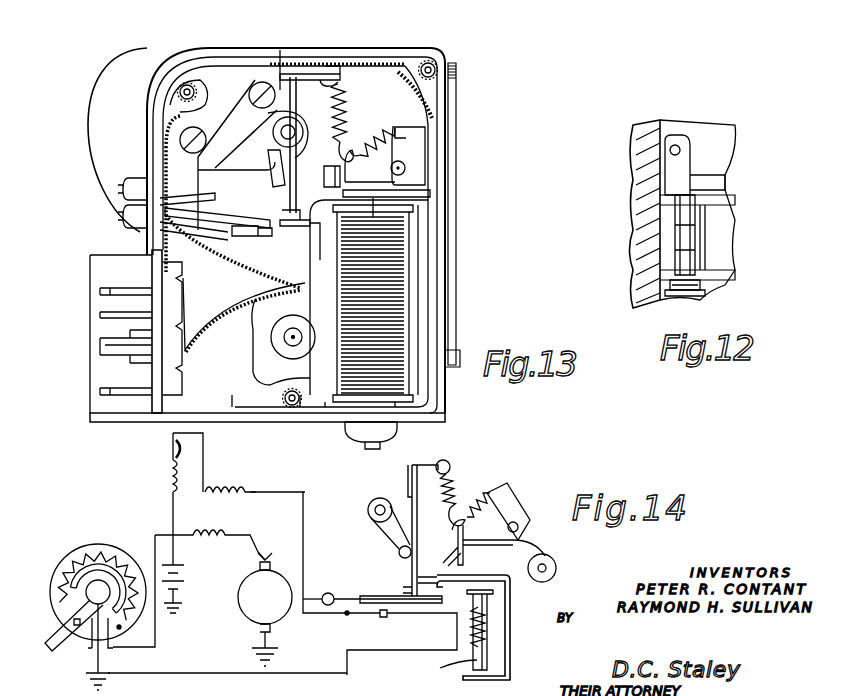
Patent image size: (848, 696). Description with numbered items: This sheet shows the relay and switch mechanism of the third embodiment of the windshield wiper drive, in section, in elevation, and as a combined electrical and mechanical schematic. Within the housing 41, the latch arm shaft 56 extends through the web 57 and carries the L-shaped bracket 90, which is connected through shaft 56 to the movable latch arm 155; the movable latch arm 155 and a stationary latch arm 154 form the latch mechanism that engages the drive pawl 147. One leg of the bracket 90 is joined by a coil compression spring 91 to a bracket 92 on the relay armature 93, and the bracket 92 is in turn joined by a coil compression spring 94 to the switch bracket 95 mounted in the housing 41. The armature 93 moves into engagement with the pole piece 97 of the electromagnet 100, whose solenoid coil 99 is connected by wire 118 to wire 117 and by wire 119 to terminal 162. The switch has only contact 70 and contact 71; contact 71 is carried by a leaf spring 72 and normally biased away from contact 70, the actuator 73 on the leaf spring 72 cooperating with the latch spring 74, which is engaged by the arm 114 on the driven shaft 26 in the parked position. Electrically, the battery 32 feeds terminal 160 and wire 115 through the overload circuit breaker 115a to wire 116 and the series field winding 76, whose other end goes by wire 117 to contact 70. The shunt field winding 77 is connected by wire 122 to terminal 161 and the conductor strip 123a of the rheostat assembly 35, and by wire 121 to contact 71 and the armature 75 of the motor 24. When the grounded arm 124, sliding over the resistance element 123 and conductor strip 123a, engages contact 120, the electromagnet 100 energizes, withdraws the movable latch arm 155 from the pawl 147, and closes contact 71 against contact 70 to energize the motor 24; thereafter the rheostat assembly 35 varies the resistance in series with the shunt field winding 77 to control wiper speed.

In FIG. 13, the motor 24 is at (458, 72).
In FIG. 14, the motor 24 is at (282, 620).
In FIG. 13, the driven shaft 26 is at (273, 140).
In FIG. 14, the driven shaft 26 is at (377, 500).
In FIG. 14, the battery 32 is at (183, 580).
In FIG. 14, the rheostat assembly 35 is at (93, 552).
In FIG. 13, the housing 41 is at (258, 66).
In FIG. 13, the latch arm shaft 56 is at (405, 168).
In FIG. 12, the latch arm shaft 56 is at (690, 236).
In FIG. 14, the latch arm shaft 56 is at (518, 524).
In FIG. 13, the web 57 is at (448, 153).
In FIG. 12, the web 57 is at (645, 235).
In FIG. 13, the contact 70 is at (262, 236).
In FIG. 14, the contact 70 is at (388, 613).
In FIG. 13, the contact 71 is at (270, 220).
In FIG. 14, the contact 71 is at (380, 599).
In FIG. 13, the leaf spring 72 is at (235, 238).
In FIG. 14, the leaf spring 72 is at (336, 596).
In FIG. 13, the actuator 73 is at (304, 240).
In FIG. 14, the actuator 73 is at (420, 590).
In FIG. 13, the latch spring 74 is at (296, 180).
In FIG. 14, the latch spring 74 is at (417, 520).
In FIG. 14, the armature 75 is at (250, 612).
In FIG. 14, the series field winding 76 is at (248, 494).
In FIG. 14, the shunt field winding 77 is at (222, 537).
In FIG. 13, the L-shaped bracket 90 is at (420, 143).
In FIG. 12, the L-shaped bracket 90 is at (692, 172).
In FIG. 14, the L-shaped bracket 90 is at (510, 495).
In FIG. 13, the coil compression spring 91 is at (372, 132).
In FIG. 14, the coil compression spring 91 is at (470, 495).
In FIG. 13, the bracket 92 is at (344, 173).
In FIG. 14, the bracket 92 is at (488, 545).
In FIG. 13, the relay armature 93 is at (432, 200).
In FIG. 14, the relay armature 93 is at (502, 582).
In FIG. 13, the coil compression spring 94 is at (342, 105).
In FIG. 14, the coil compression spring 94 is at (452, 468).
In FIG. 13, the switch bracket 95 is at (313, 74).
In FIG. 14, the switch bracket 95 is at (438, 462).
In FIG. 13, the pole piece 97 is at (373, 300).
In FIG. 14, the pole piece 97 is at (490, 588).
In FIG. 13, the solenoid coil 99 is at (400, 308).
In FIG. 14, the solenoid coil 99 is at (473, 630).
In FIG. 13, the electromagnet 100 is at (400, 265).
In FIG. 14, the electromagnet 100 is at (436, 676).
In FIG. 13, the arm 114 is at (273, 186).
In FIG. 14, the arm 114 is at (378, 522).
In FIG. 14, the wire 115 is at (172, 508).
In FIG. 14, the overload circuit breaker 115a is at (183, 448).
In FIG. 14, the wire 116 is at (206, 475).
In FIG. 14, the wire 117 is at (305, 492).
In FIG. 13, the wire 118 is at (240, 264).
In FIG. 14, the wire 118 is at (372, 620).
In FIG. 13, the wire 119 is at (220, 312).
In FIG. 14, the wire 119 is at (340, 672).
In FIG. 14, the contact 120 is at (107, 570).
In FIG. 13, the wire 121 is at (227, 156).
In FIG. 14, the wire 121 is at (305, 548).
In FIG. 13, the wire 122 is at (147, 235).
In FIG. 14, the wire 122 is at (155, 640).
In FIG. 14, the resistance element 123 is at (75, 565).
In FIG. 14, the conductor strip 123a is at (79, 630).
In FIG. 14, the arm or slider 124 is at (55, 653).
In FIG. 14, the drive pawl 147 is at (556, 566).
In FIG. 12, the stationary latch arm 154 is at (735, 283).
In FIG. 12, the movable latch arm 155 is at (705, 292).
In FIG. 13, the terminal 160 is at (100, 388).
In FIG. 13, the terminal 161 is at (100, 290).
In FIG. 13, the terminal 162 is at (105, 345).